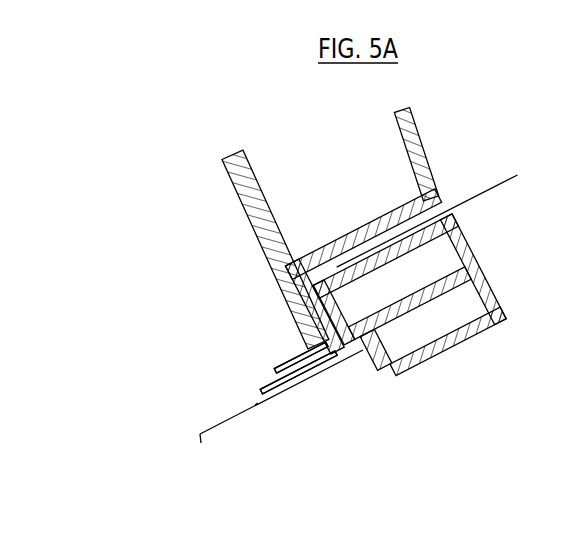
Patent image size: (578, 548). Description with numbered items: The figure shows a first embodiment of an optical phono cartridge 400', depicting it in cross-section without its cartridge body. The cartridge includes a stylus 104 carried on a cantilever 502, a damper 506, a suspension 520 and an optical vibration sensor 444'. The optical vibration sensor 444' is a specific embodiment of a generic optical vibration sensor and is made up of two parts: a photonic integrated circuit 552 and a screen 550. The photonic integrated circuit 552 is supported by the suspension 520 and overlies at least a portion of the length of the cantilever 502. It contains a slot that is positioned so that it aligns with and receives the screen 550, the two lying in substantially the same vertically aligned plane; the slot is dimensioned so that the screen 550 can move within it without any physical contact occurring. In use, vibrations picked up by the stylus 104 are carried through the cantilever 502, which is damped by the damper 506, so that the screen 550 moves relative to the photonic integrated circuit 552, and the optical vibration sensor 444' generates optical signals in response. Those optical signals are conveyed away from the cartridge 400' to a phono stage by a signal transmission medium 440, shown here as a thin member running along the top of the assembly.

The optical phono cartridge 400' is at (313, 266).
The signal transmission medium 440 is at (469, 197).
The optical vibration sensor 444' is at (201, 336).
The suspension 520 is at (283, 250).
The screen 550 is at (277, 367).
The photonic integrated circuit 552 is at (262, 388).
The damper 506 is at (403, 330).
The stylus 104 is at (198, 443).
The cantilever 502 is at (255, 405).